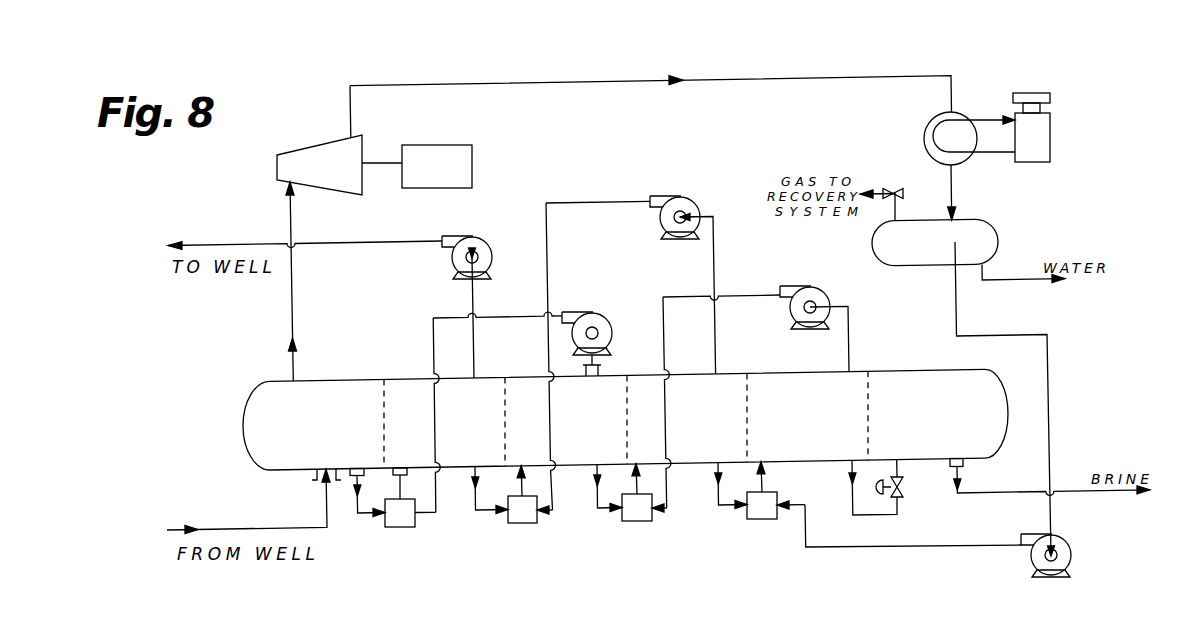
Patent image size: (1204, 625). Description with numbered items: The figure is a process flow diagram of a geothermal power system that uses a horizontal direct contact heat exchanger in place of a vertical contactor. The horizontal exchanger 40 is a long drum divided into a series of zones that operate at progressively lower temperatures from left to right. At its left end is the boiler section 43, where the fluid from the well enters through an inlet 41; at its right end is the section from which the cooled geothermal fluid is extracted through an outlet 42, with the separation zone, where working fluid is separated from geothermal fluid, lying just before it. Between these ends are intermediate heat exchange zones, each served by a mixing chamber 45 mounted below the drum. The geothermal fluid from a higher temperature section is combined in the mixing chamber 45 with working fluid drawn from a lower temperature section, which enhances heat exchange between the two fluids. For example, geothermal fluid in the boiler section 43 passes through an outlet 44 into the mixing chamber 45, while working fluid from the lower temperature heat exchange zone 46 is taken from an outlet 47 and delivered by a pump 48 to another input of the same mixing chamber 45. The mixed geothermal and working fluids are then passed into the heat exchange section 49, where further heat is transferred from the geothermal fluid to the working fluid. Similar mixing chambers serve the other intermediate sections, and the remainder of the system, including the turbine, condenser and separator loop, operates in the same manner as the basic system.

The horizontal exchanger 40 is at (329, 381).
The inlet 41 is at (316, 482).
The outlet 42 is at (964, 462).
The boiler section 43 is at (336, 422).
The outlet 44 is at (354, 480).
The mixing chamber 45 is at (401, 528).
The lower temperature heat exchange zone 46 is at (604, 429).
The outlet 47 is at (603, 364).
The pump 48 is at (598, 313).
The heat exchange section 49 is at (484, 429).